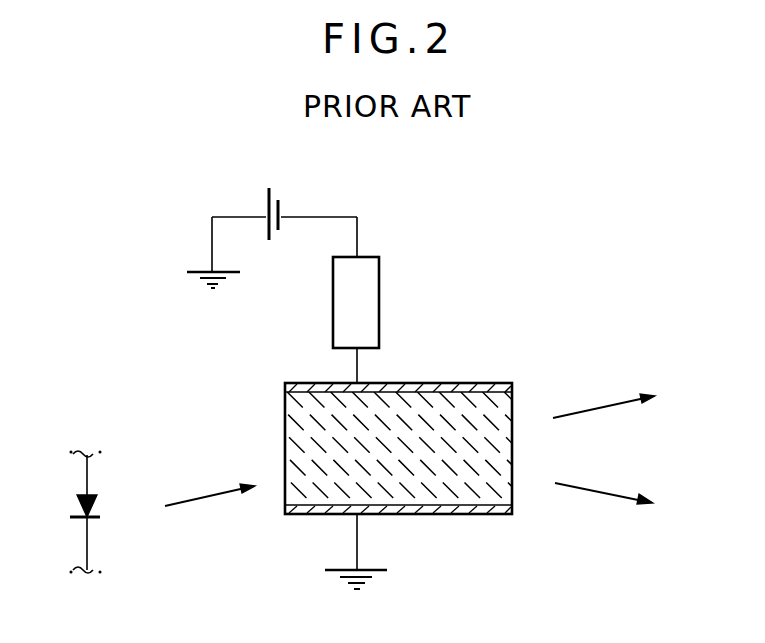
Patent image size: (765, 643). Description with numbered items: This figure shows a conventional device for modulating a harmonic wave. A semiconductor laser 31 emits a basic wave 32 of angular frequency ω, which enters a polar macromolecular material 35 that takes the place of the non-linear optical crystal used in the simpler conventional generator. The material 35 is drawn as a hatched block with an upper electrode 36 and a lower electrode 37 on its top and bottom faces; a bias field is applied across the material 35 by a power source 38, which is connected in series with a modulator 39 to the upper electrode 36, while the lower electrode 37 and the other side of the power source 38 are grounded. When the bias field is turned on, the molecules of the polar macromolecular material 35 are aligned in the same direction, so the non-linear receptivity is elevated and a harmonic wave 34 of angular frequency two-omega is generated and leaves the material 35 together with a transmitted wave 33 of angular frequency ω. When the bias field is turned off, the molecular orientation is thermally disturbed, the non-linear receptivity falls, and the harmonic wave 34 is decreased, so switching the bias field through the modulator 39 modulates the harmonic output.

The semiconductor laser 31 is at (70, 510).
The basic wave 32 is at (220, 497).
The transmitted wave 33 is at (622, 403).
The harmonic wave 34 is at (620, 500).
The polar macromolecular material 35 is at (290, 412).
The upper electrode 36 is at (468, 383).
The lower electrode 37 is at (457, 514).
The power source 38 is at (277, 202).
The modulator 39 is at (372, 297).